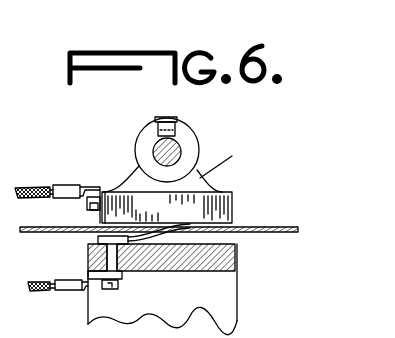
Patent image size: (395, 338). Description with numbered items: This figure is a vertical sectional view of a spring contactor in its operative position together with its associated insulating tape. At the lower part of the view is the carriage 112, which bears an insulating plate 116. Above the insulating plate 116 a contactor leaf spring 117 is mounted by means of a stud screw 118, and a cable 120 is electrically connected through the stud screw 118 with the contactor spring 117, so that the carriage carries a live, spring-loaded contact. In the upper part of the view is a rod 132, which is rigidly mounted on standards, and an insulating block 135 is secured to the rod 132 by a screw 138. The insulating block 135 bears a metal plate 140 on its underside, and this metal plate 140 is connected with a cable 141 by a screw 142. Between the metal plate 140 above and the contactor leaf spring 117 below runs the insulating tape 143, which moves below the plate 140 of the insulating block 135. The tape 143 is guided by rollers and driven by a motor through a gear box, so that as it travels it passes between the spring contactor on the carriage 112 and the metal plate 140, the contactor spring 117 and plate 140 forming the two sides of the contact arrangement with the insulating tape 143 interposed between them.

The carriage 112 is at (230, 302).
The insulating plate 116 is at (235, 257).
The contactor leaf spring 117 is at (155, 271).
The stud screw 118 is at (110, 289).
The cable 120 is at (33, 291).
The rod 132 is at (181, 151).
The insulating block 135 is at (198, 185).
The screw 138 is at (167, 117).
The metal plate 140 is at (222, 205).
The cable 141 is at (30, 188).
The screw 142 is at (87, 207).
The insulating tape 143 is at (290, 228).